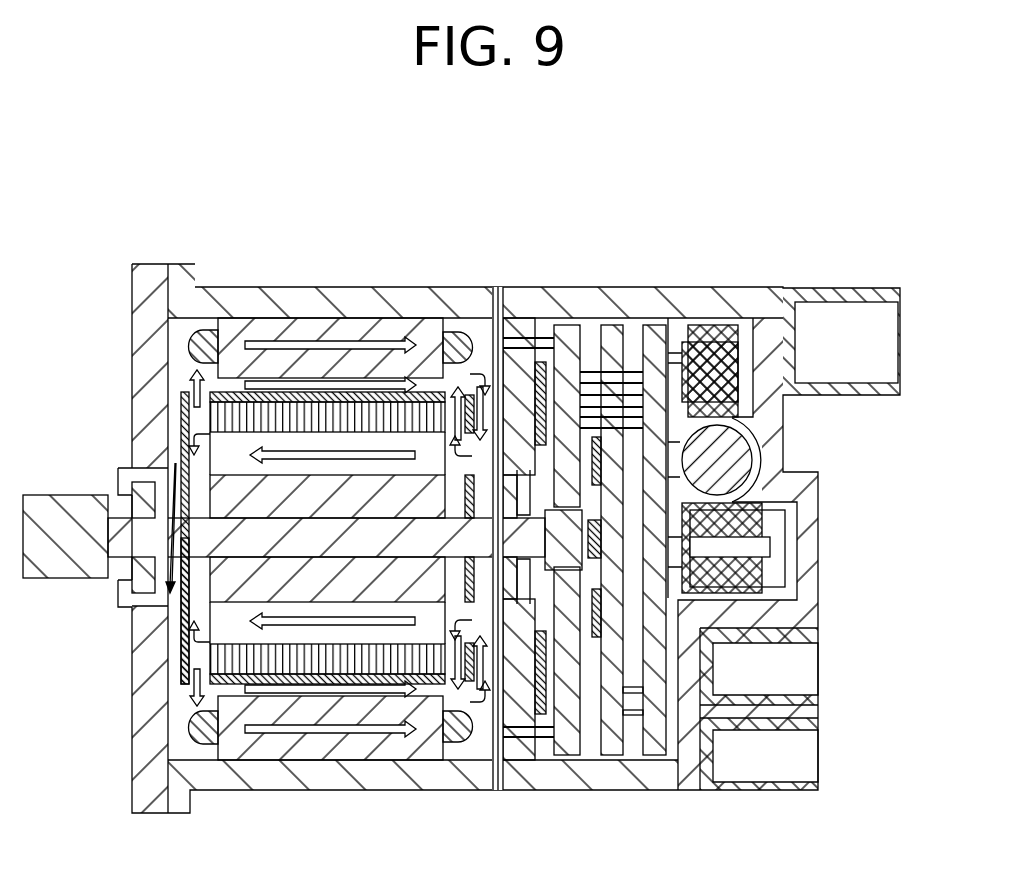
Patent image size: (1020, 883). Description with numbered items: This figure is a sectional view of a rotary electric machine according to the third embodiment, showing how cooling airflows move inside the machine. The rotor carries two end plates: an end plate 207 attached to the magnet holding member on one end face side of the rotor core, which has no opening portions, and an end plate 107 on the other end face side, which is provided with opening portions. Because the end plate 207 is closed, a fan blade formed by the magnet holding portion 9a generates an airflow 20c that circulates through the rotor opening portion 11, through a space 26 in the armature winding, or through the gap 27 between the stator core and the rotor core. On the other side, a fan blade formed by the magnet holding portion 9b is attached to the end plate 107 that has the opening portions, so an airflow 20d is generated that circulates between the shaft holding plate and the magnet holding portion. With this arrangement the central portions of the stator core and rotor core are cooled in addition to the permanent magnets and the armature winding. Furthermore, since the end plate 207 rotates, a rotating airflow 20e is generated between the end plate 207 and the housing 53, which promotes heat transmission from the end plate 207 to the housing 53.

The housing 53 is at (148, 785).
The space in the armature winding 26 is at (352, 345).
The gap between the stator core and the rotor core 27 is at (266, 378).
The rotor opening portion 11 is at (410, 630).
The end plate 107 is at (458, 583).
The airflow 20d is at (480, 370).
The airflow 20c is at (237, 445).
The rotating airflow 20e is at (167, 468).
The end plate 207 is at (180, 643).
The magnet holding portion 9a is at (180, 596).
The magnet holding portion 9b is at (468, 575).